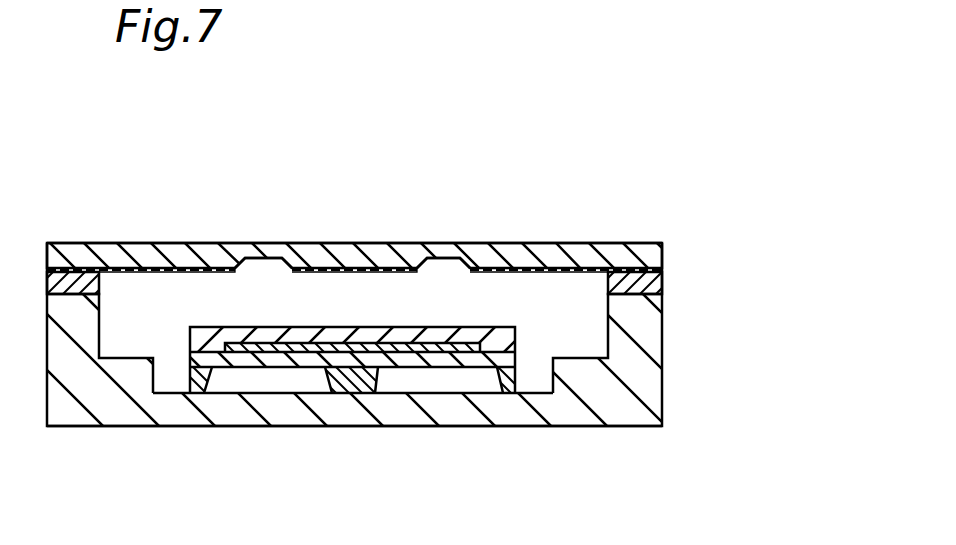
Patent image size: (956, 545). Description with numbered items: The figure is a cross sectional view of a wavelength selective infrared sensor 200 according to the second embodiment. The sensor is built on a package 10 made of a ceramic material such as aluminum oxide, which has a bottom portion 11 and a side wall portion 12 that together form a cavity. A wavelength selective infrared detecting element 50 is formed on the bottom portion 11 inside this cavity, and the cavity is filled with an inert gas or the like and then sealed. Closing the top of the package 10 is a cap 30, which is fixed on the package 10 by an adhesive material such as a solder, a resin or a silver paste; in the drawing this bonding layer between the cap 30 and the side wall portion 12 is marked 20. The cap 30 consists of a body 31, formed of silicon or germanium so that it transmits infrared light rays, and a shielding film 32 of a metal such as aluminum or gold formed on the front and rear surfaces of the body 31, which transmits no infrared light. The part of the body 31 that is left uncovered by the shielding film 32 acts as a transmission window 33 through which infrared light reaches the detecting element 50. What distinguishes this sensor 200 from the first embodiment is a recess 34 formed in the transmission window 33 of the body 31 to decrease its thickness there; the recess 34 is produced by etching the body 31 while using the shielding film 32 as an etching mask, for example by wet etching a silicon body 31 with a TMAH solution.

The wavelength selective infrared sensor 200 is at (232, 207).
The package 10 is at (761, 399).
The bottom portion 11 is at (607, 416).
The side wall portion 12 is at (650, 344).
The bonding layer 20 is at (657, 283).
The cap 30 is at (688, 140).
The body 31 is at (558, 247).
The shielding film 32 is at (618, 247).
The transmission window 33 is at (447, 280).
The recess 34 is at (278, 245).
The wavelength selective infrared detecting element 50 is at (516, 432).